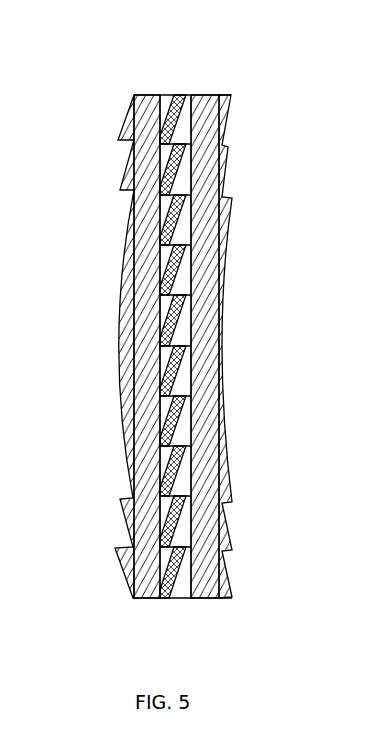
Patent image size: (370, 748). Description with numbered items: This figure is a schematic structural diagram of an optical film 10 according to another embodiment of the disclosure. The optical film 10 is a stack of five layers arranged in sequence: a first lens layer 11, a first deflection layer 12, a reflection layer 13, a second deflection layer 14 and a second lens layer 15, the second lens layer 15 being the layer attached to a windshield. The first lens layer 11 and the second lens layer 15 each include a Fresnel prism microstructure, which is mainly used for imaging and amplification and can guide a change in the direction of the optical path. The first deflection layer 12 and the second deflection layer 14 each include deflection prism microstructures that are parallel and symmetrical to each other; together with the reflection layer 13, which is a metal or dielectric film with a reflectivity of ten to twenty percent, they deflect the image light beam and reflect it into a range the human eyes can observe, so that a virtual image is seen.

The optical film 10 is at (93, 25).
The first lens layer 11 is at (122, 128).
The first deflection layer 12 is at (168, 106).
The reflection layer 13 is at (170, 598).
The second deflection layer 14 is at (182, 436).
The second lens layer 15 is at (229, 588).